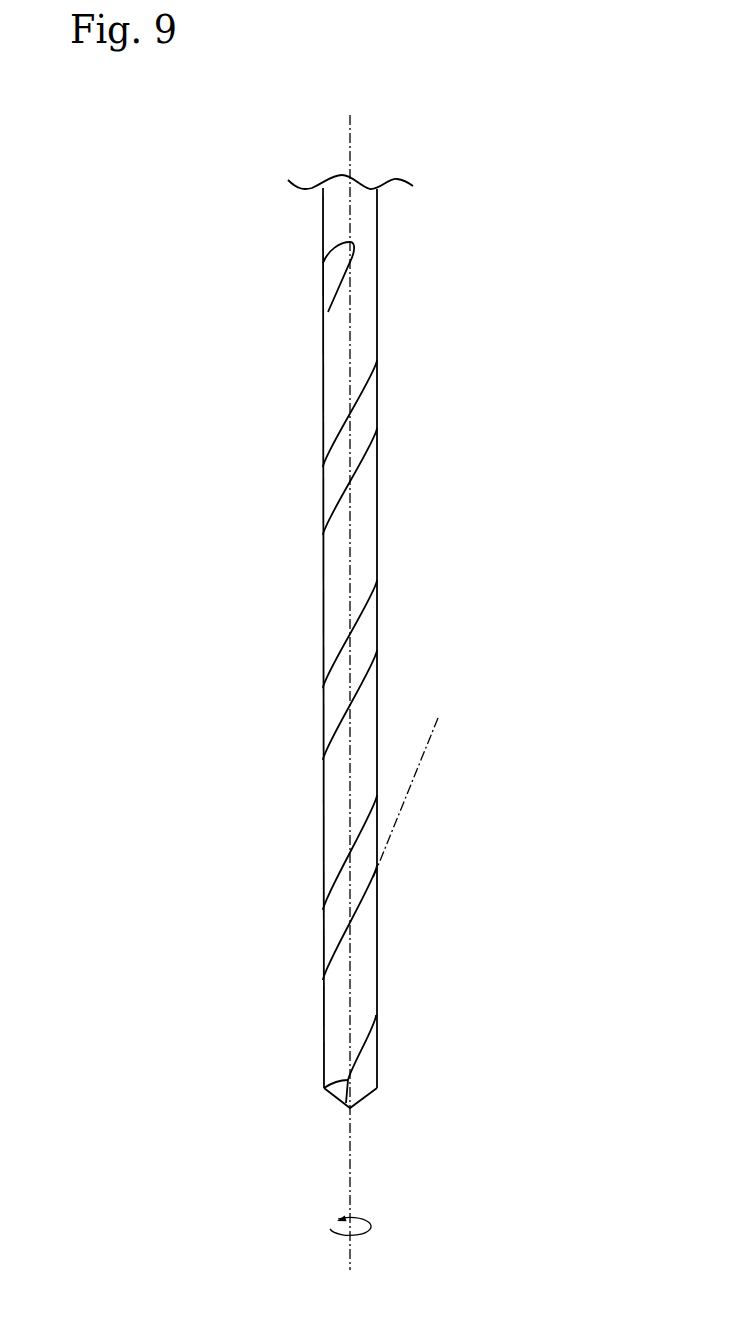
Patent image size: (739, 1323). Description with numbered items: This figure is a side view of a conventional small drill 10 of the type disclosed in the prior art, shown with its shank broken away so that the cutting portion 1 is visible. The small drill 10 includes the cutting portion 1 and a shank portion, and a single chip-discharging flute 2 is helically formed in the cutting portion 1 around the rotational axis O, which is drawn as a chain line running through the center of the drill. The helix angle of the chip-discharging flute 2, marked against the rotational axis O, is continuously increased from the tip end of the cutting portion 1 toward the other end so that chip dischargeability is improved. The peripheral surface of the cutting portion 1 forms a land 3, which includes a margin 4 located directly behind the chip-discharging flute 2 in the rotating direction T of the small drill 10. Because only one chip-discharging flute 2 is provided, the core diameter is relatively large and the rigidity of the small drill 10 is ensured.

The small drill 10 is at (540, 320).
The cutting portion 1 is at (388, 468).
The chip-discharging flute 2 is at (362, 1081).
The land 3 is at (372, 970).
The margin 4 is at (362, 1012).
The rotational axis O is at (356, 1165).
The rotating direction T is at (357, 1239).